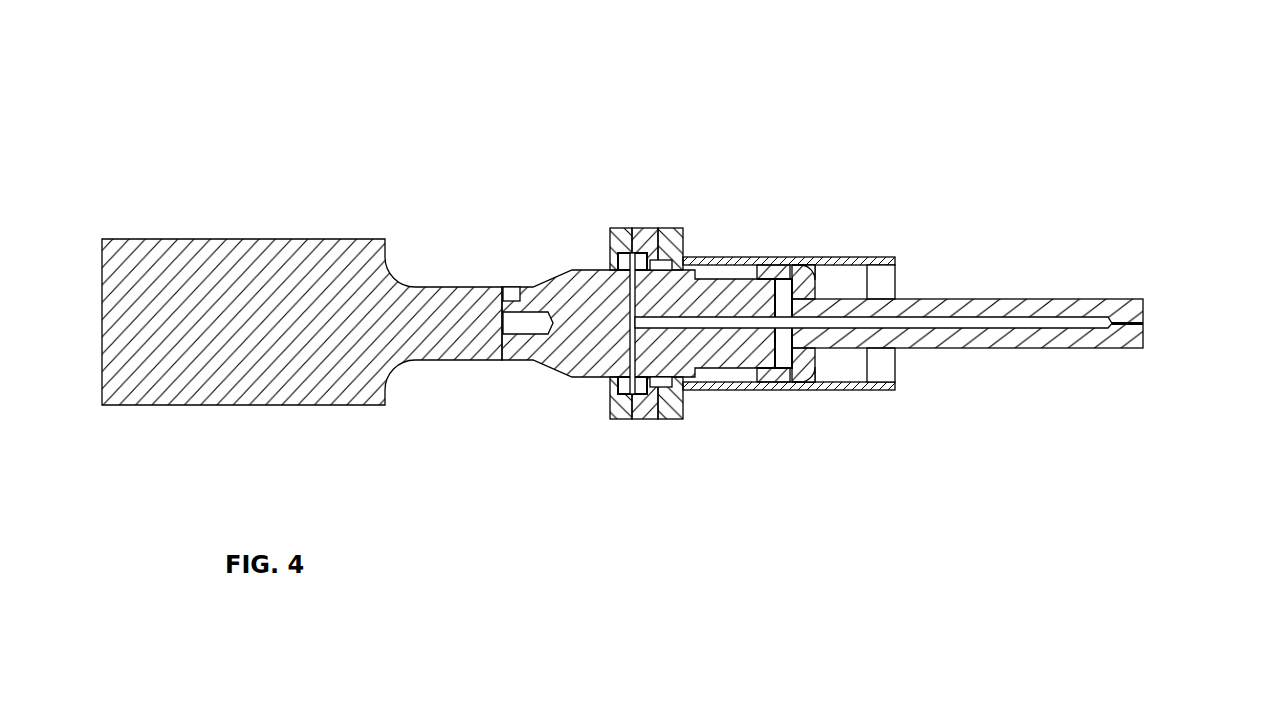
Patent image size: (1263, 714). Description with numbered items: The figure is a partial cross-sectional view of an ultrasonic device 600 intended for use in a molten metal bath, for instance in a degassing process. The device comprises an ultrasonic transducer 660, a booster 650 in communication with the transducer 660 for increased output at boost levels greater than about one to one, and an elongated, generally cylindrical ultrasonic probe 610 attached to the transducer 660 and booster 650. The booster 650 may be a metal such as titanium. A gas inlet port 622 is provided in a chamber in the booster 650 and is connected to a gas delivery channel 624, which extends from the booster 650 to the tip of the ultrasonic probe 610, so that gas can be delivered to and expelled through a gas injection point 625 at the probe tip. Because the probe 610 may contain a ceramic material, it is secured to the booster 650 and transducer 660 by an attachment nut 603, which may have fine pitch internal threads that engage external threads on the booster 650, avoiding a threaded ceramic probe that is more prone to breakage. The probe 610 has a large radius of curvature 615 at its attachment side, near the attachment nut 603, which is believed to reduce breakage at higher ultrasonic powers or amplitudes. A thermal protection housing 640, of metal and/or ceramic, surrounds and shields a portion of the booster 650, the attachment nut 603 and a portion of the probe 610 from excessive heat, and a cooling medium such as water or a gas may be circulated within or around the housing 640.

The ultrasonic device 600 is at (683, 127).
The ultrasonic transducer 660 is at (247, 237).
The booster 650 is at (573, 262).
The gas delivery channel 624 is at (707, 330).
The gas inlet port 622 is at (628, 397).
The thermal protection housing 640 is at (792, 257).
The radius of curvature 615 is at (805, 292).
The attachment nut 603 is at (813, 380).
The ultrasonic probe 610 is at (980, 298).
The gas injection point 625 is at (1143, 320).